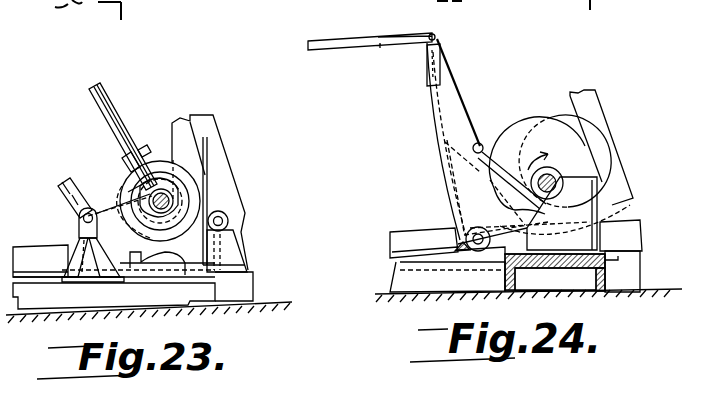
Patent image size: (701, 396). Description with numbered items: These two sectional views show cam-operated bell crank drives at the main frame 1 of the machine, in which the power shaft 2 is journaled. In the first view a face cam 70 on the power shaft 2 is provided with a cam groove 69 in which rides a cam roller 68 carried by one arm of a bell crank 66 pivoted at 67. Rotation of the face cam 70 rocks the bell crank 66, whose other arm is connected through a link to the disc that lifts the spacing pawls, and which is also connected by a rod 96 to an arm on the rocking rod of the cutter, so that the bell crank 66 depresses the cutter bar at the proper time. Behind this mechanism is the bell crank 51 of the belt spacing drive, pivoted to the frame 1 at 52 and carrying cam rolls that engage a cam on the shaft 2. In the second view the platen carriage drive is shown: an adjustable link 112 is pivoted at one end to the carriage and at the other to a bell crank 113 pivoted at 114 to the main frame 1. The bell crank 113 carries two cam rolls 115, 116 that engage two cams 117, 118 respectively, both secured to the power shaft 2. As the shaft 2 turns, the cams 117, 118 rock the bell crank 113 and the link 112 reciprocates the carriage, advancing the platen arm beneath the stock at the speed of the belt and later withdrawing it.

In FIG. 23, the main frame 1 is at (244, 288).
In FIG. 24, the main frame 1 is at (655, 268).
In FIG. 23, the power shaft 2 is at (170, 198).
In FIG. 24, the power shaft 2 is at (550, 180).
In FIG. 23, the bell crank 51 is at (214, 152).
In FIG. 24, the bell crank 51 is at (612, 182).
In FIG. 23, the pivot 52 is at (222, 217).
In FIG. 23, the bell crank 66 is at (128, 182).
In FIG. 23, the pivot 67 is at (84, 218).
In FIG. 23, the cam roller 68 is at (124, 158).
In FIG. 23, the cam groove 69 is at (136, 226).
In FIG. 23, the face cam 70 is at (153, 162).
In FIG. 23, the rod 96 is at (112, 128).
In FIG. 24, the adjustable link 112 is at (350, 41).
In FIG. 24, the bell crank 113 is at (462, 178).
In FIG. 24, the pivot 114 is at (474, 238).
In FIG. 24, the cam roll 115 is at (486, 142).
In FIG. 24, the cam roll 116 is at (638, 246).
In FIG. 24, the cam 117 is at (514, 126).
In FIG. 24, the cam 118 is at (565, 118).